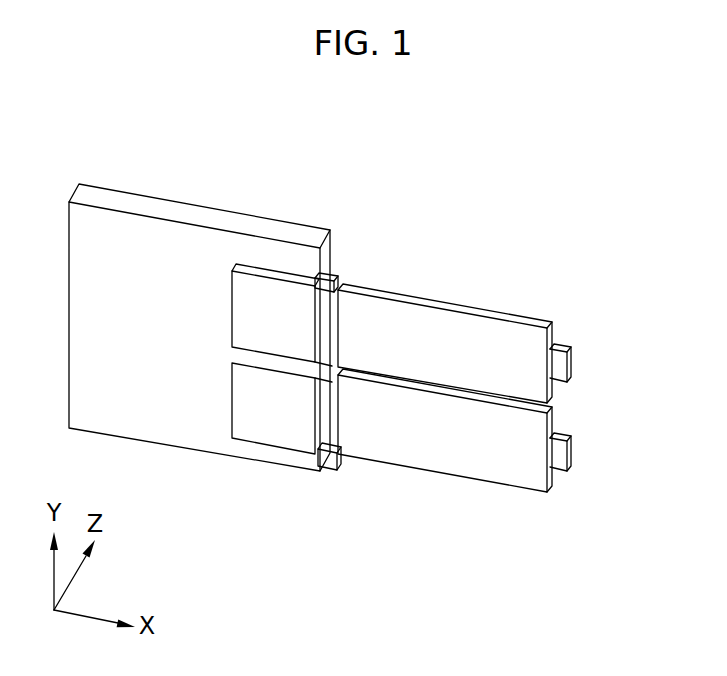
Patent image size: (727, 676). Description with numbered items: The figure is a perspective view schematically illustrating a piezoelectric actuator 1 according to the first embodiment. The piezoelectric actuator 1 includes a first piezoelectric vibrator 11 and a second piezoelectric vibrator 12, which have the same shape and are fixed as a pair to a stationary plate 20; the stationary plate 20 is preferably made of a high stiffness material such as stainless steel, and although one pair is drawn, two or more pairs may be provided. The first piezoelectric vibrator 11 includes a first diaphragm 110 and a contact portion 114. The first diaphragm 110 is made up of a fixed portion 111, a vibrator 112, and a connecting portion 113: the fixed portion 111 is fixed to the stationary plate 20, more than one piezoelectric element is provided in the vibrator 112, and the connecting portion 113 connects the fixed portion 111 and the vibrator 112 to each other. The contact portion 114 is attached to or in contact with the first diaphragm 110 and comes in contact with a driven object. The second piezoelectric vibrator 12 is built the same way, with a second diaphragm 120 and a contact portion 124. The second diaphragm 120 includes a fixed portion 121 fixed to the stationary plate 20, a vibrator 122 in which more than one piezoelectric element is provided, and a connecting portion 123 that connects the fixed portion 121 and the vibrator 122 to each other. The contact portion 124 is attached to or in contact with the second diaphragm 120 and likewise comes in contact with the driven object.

The piezoelectric actuator 1 is at (629, 156).
The first piezoelectric vibrator 11 is at (342, 156).
The second piezoelectric vibrator 12 is at (563, 580).
The stationary plate 20 is at (148, 202).
The first diaphragm 110 is at (285, 190).
The fixed portion 111 is at (292, 280).
The vibrator 112 is at (387, 285).
The connecting portion 113 is at (332, 278).
The contact portion 114 is at (560, 342).
The second diaphragm 120 is at (255, 537).
The fixed portion 121 is at (263, 438).
The vibrator 122 is at (373, 458).
The connecting portion 123 is at (328, 457).
The contact portion 124 is at (557, 468).